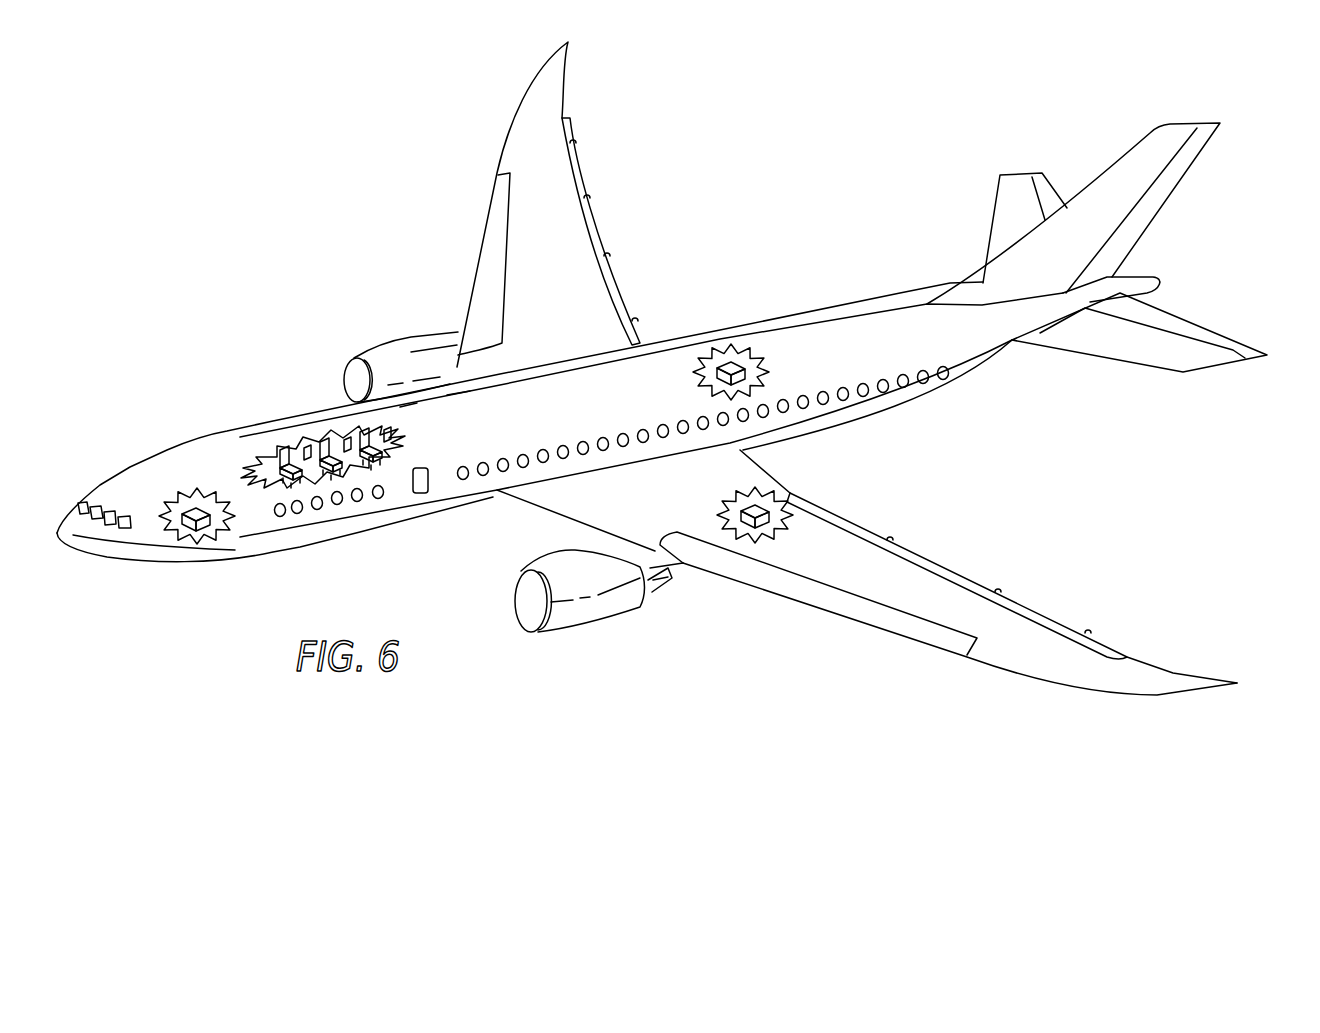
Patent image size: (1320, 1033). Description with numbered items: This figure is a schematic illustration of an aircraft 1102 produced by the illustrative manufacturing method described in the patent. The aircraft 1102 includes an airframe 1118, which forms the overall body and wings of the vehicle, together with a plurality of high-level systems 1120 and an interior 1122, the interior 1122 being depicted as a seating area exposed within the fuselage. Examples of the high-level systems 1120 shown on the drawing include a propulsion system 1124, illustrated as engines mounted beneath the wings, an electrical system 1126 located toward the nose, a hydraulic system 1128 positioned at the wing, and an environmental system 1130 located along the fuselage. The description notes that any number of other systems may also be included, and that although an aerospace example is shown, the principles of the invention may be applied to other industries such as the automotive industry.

The aircraft 1102 is at (354, 227).
The airframe 1118 is at (319, 404).
The high-level systems 1120 is at (1128, 527).
The interior 1122 is at (310, 485).
The propulsion system 1124 is at (388, 352).
The electrical system 1126 is at (190, 508).
The hydraulic system 1128 is at (758, 508).
The environmental system 1130 is at (730, 345).